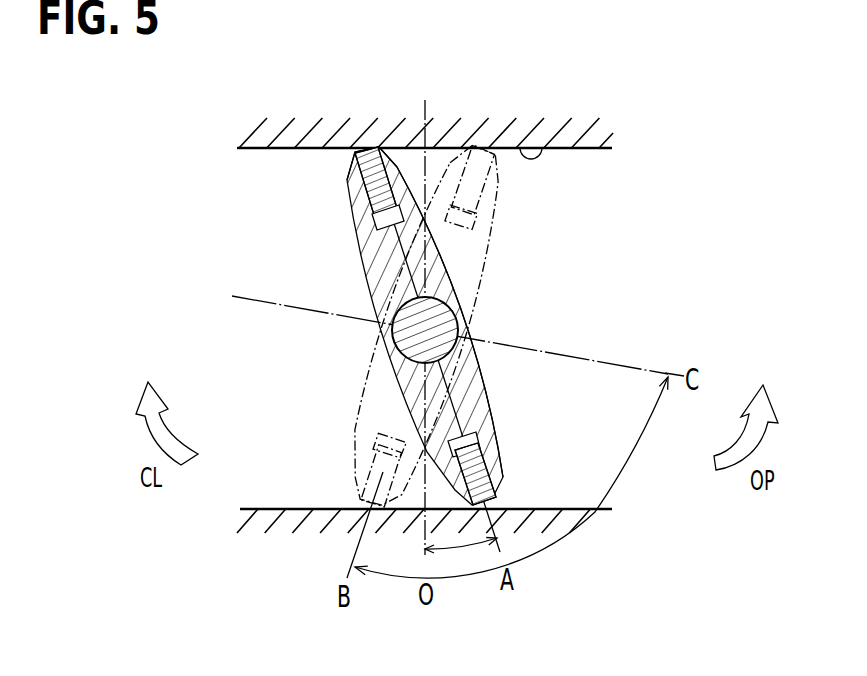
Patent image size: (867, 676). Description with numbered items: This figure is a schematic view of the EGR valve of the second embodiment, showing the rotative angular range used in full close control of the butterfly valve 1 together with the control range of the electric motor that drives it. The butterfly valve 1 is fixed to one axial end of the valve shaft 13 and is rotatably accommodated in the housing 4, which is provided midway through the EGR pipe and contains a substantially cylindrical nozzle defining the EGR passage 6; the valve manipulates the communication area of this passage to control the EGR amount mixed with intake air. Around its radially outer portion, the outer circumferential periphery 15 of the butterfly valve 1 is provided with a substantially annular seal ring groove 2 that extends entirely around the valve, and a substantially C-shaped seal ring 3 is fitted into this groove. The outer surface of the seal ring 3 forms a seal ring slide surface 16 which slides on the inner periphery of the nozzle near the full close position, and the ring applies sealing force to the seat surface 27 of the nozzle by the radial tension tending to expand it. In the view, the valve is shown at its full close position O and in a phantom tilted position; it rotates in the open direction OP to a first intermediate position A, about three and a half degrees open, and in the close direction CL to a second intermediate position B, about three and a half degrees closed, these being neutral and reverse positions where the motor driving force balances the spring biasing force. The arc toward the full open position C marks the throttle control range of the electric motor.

The butterfly valve 1 is at (358, 247).
The seal ring groove 2 is at (400, 163).
The seal ring 3 is at (350, 180).
The housing 4 is at (578, 128).
The EGR passage 6 is at (587, 249).
The valve shaft 13 is at (394, 329).
The outer circumferential periphery 15 is at (383, 173).
The seal ring slide surface 16 is at (362, 170).
The seat surface 27 is at (539, 150).